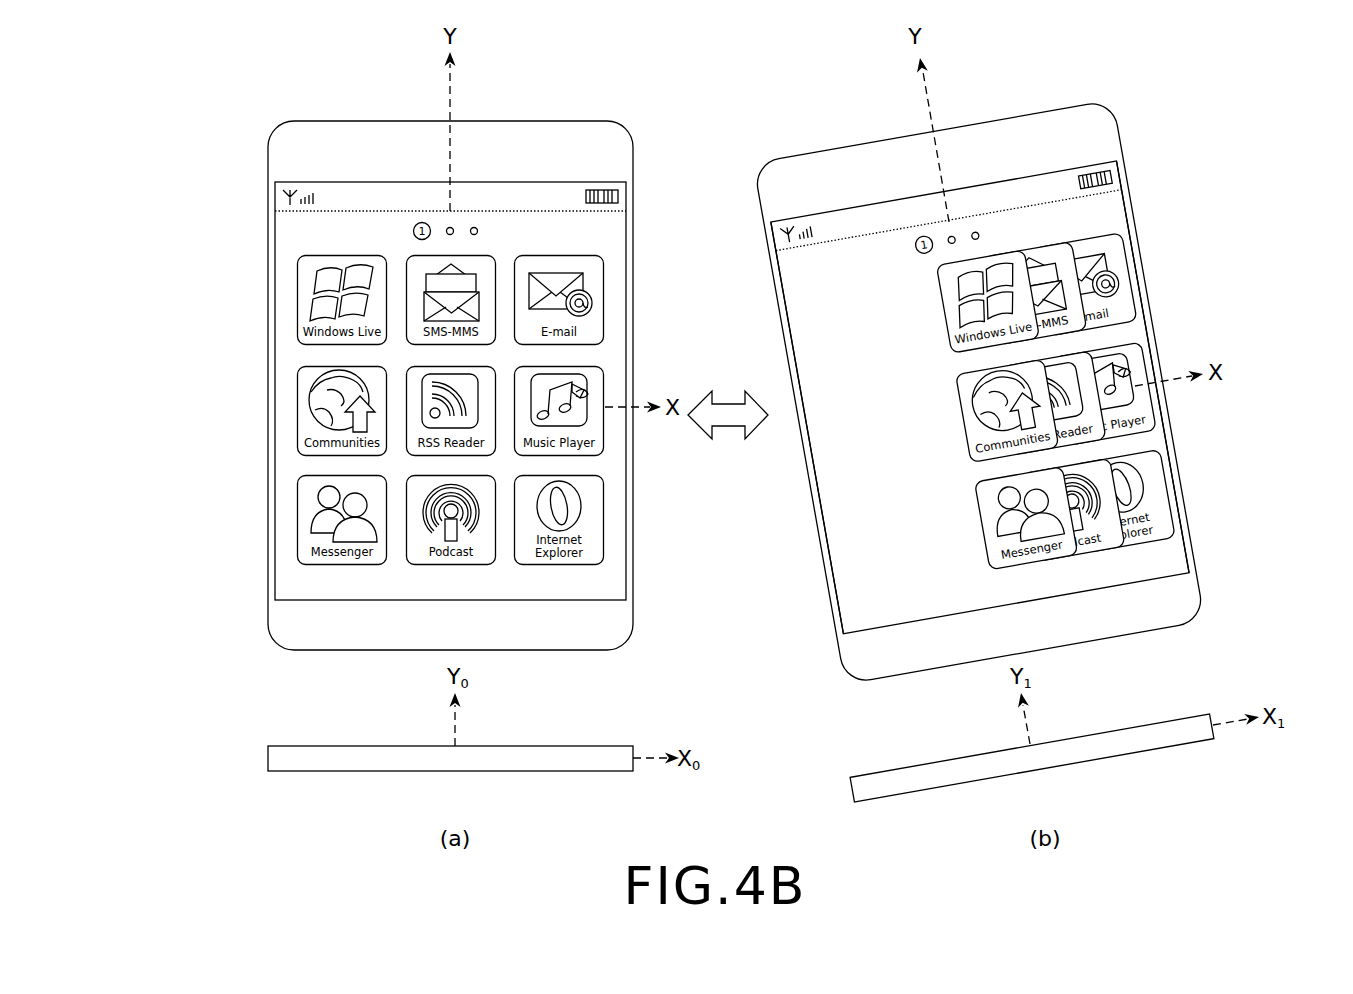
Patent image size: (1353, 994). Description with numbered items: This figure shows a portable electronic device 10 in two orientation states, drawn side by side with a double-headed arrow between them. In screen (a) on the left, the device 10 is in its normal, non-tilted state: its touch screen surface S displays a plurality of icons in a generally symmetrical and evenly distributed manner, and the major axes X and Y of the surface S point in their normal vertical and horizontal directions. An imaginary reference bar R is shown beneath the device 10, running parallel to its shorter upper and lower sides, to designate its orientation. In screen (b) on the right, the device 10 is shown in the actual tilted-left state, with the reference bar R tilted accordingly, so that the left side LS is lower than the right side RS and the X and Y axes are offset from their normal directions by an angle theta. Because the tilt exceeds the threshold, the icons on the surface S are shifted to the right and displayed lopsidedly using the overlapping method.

The portable electronic device 10 is at (292, 92).
The surface S is at (298, 237).
The left side LS is at (815, 512).
The right side RS is at (1175, 462).
The reference bar R is at (292, 766).